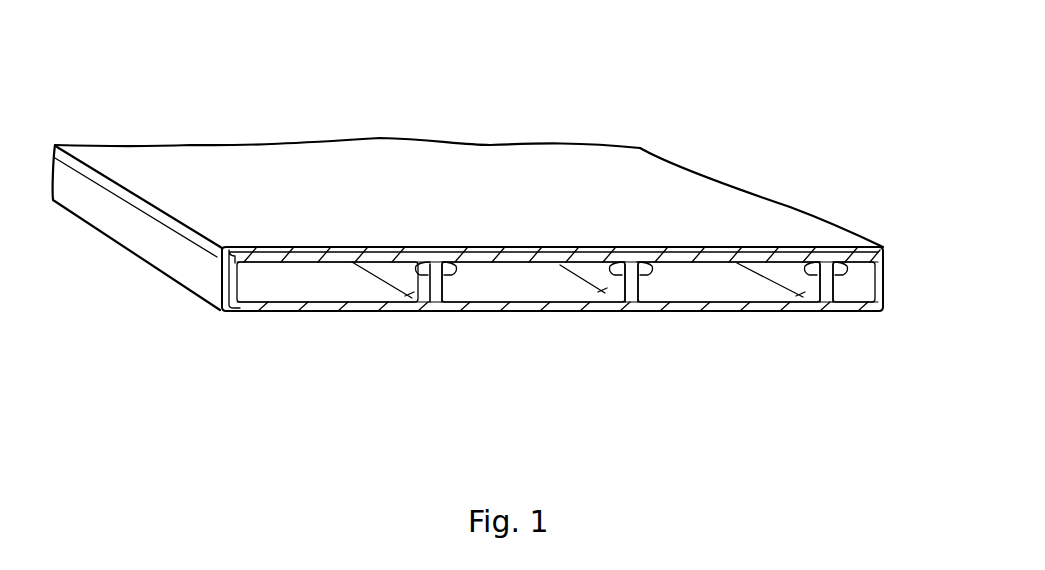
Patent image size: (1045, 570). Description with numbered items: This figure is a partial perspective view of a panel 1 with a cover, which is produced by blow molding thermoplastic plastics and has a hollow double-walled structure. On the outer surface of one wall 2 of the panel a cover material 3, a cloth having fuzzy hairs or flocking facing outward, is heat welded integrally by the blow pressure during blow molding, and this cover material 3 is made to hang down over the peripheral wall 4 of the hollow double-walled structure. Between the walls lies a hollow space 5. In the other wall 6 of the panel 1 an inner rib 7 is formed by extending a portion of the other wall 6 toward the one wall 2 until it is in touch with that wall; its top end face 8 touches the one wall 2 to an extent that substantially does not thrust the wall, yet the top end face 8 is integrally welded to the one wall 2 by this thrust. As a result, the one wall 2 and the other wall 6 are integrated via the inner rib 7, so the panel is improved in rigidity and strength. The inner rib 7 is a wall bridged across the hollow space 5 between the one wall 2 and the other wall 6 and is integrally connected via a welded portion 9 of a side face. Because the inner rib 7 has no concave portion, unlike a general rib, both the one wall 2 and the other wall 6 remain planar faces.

The panel with a cover 1 is at (278, 130).
The one wall 2 is at (788, 248).
The cover material 3 is at (707, 190).
The peripheral wall 4 is at (175, 265).
The hollow space 5 is at (498, 276).
The other wall 6 is at (693, 307).
The inner rib 7 is at (406, 281).
The top end face 8 is at (460, 265).
The welded portion 9 is at (423, 276).